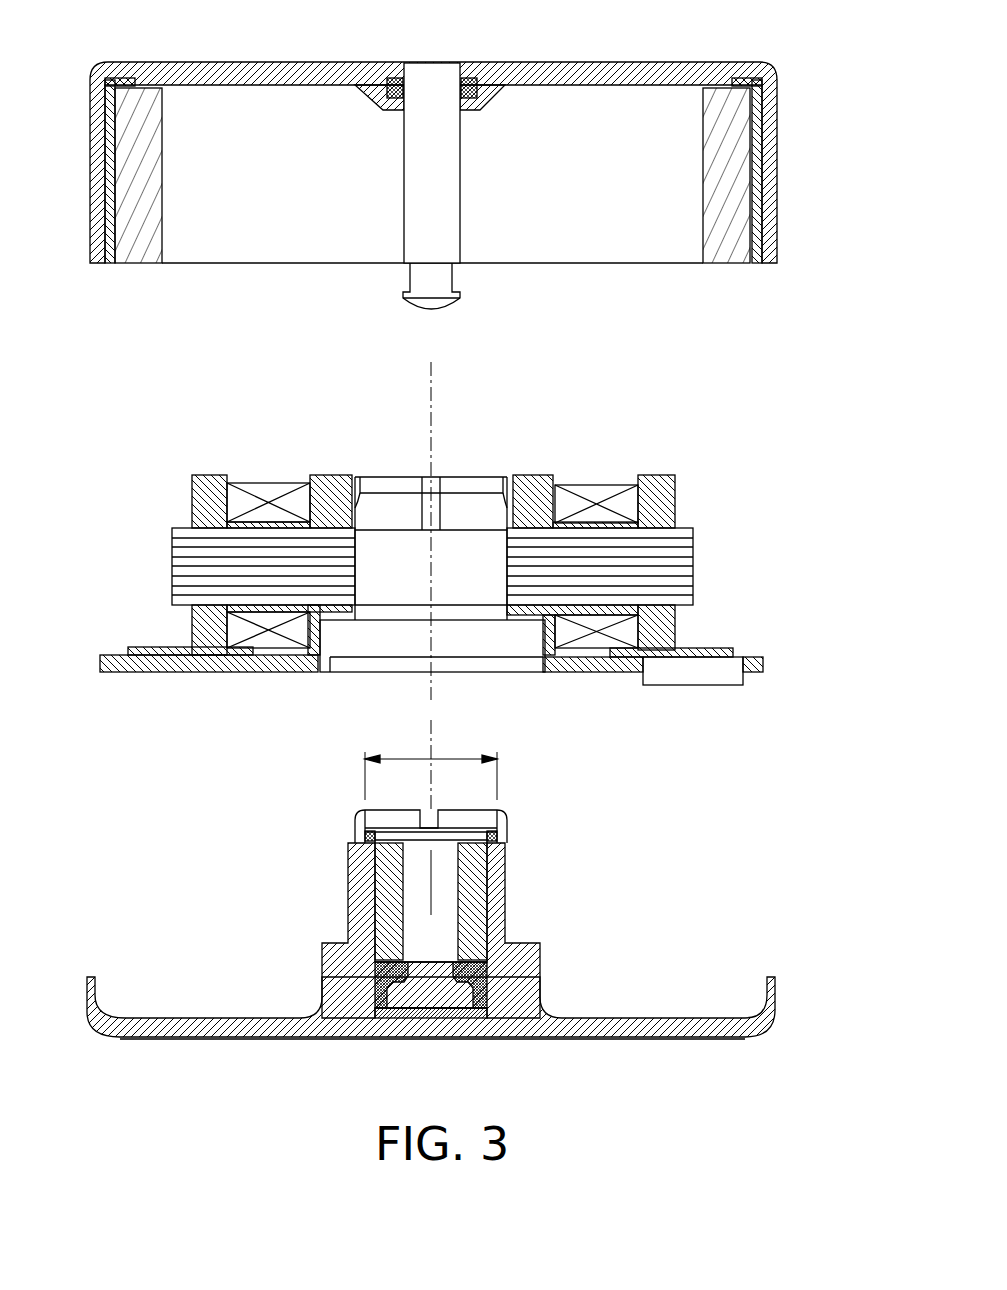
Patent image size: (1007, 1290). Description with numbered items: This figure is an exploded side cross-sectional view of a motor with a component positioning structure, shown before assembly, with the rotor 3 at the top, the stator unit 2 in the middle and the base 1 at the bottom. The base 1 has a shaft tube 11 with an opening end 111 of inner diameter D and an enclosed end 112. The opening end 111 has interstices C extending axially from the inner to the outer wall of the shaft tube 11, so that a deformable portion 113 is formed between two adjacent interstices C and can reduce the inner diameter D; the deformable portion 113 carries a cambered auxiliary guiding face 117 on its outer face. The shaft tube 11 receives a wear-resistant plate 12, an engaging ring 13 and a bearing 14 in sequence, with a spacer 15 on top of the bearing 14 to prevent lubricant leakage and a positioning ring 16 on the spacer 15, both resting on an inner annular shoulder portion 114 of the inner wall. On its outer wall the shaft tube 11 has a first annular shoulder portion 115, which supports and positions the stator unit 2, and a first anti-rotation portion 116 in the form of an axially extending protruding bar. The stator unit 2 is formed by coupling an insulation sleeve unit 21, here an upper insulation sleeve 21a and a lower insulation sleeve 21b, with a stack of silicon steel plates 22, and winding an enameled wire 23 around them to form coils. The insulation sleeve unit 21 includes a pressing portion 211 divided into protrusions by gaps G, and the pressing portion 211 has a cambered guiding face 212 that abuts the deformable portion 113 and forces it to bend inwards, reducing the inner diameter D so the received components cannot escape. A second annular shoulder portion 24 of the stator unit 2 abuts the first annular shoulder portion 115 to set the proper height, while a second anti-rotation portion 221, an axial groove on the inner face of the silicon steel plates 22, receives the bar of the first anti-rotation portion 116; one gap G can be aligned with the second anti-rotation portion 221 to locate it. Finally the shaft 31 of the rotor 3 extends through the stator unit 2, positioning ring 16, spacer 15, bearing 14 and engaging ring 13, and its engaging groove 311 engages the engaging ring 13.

The base 1 is at (603, 1020).
The shaft tube 11 is at (507, 903).
The opening end 111 is at (503, 820).
The enclosed end 112 is at (382, 1027).
The deformable portion 113 is at (507, 833).
The inner annular shoulder portion 114 is at (367, 836).
The first annular shoulder portion 115 is at (322, 943).
The first anti-rotation portion 116 is at (348, 865).
The auxiliary guiding face 117 is at (505, 828).
The wear-resistant plate 12 is at (422, 1018).
The engaging ring 13 is at (375, 970).
The bearing 14 is at (382, 883).
The spacer 15 is at (383, 830).
The positioning ring 16 is at (362, 820).
The stator unit 2 is at (178, 432).
The insulation sleeve unit 21 is at (511, 518).
The upper insulation sleeve 21a is at (675, 503).
The lower insulation sleeve 21b is at (675, 625).
The pressing portion 211 is at (510, 480).
The guiding face 212 is at (487, 495).
The silicon steel plates 22 is at (170, 548).
The second anti-rotation portion 221 is at (355, 548).
The enameled wire 23 is at (267, 492).
The second annular shoulder portion 24 is at (323, 642).
The rotor 3 is at (680, 68).
The shaft 31 is at (452, 158).
The engaging groove 311 is at (455, 283).
The gap G is at (352, 478).
The inner diameter D is at (431, 765).
The interstices C is at (505, 838).